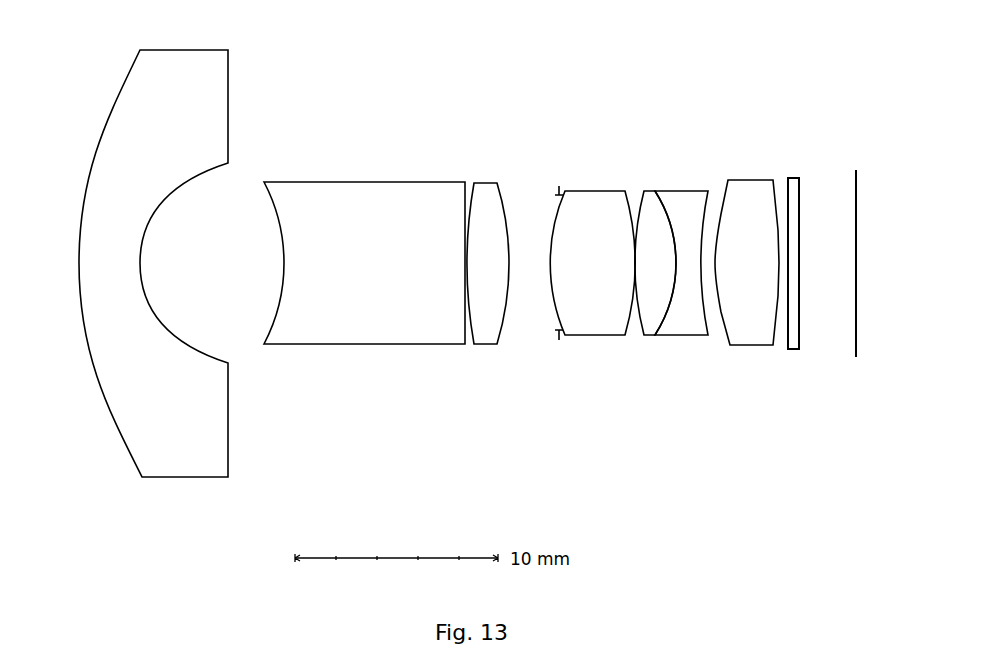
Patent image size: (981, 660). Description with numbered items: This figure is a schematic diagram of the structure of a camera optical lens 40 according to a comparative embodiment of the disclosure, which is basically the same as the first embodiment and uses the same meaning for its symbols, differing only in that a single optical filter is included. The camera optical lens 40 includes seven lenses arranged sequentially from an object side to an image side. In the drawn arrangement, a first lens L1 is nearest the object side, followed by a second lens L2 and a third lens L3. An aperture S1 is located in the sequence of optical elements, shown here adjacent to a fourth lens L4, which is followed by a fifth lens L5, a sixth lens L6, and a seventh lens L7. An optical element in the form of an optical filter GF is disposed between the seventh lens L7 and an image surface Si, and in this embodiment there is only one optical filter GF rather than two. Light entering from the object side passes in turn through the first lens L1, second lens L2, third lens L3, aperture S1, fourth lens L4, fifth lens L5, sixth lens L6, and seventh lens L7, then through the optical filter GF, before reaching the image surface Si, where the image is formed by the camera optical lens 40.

The camera optical lens 40 is at (489, 17).
The first lens L1 is at (153, 245).
The second lens L2 is at (364, 248).
The third lens L3 is at (488, 248).
The aperture S1 is at (555, 245).
The fourth lens L4 is at (592, 242).
The fifth lens L5 is at (655, 245).
The sixth lens L6 is at (681, 240).
The seventh lens L7 is at (747, 243).
The optical filter GF is at (796, 246).
The image surface Si is at (851, 240).